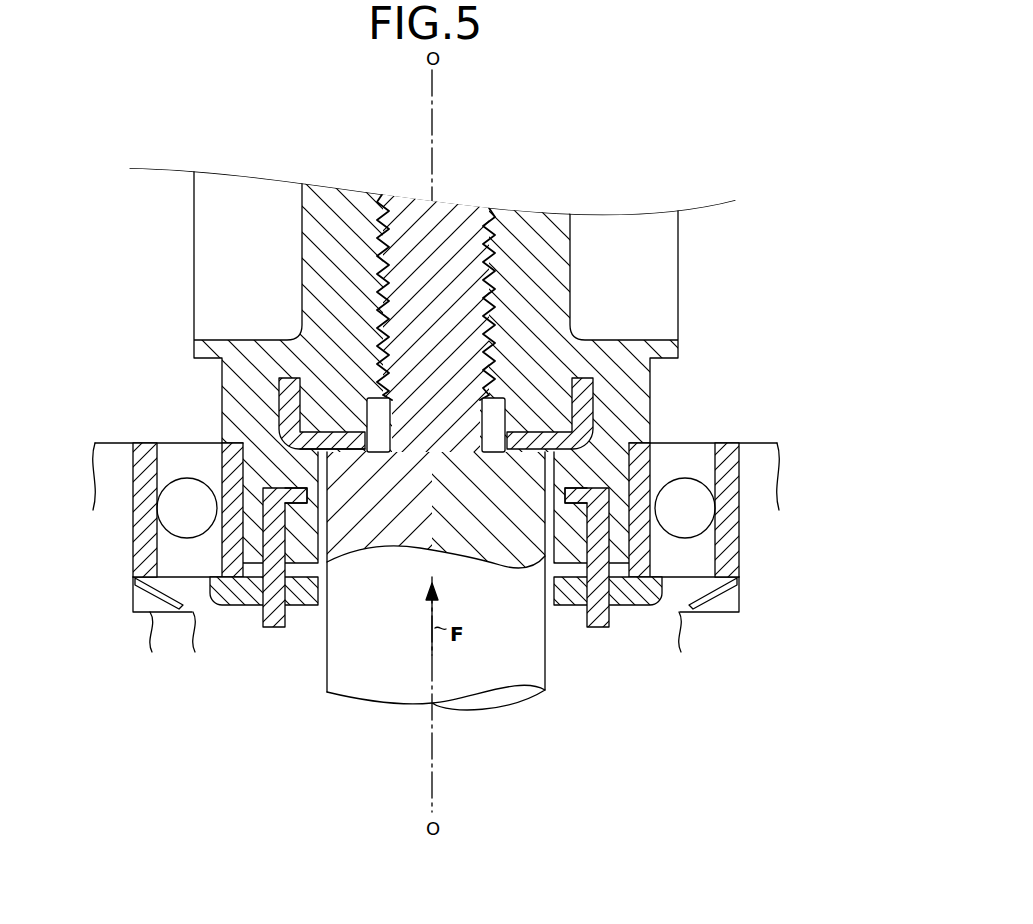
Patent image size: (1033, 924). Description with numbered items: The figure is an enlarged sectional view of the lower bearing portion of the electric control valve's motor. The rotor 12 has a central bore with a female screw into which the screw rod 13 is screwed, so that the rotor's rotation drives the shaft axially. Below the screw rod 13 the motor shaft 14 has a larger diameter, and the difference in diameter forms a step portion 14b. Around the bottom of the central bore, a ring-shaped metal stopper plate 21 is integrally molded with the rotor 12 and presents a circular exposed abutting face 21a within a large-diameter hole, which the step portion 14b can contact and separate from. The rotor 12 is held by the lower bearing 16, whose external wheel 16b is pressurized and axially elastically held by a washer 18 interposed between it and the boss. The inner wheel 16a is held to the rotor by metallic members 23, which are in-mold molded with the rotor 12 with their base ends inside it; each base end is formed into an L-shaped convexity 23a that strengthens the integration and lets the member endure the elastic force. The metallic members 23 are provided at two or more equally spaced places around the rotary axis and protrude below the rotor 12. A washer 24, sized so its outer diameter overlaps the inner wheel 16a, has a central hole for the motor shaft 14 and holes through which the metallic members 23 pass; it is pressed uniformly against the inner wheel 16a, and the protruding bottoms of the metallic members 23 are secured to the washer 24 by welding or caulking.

The rotor 12 is at (537, 223).
The screw rod 13 is at (460, 218).
The motor shaft 14 is at (373, 683).
The step portion 14b is at (522, 397).
The lower bearing 16 is at (449, 518).
The inner wheel 16a is at (650, 458).
The external wheel 16b is at (725, 547).
The washer 18 is at (423, 627).
The stopper plate 21 is at (592, 400).
The exposed abutting face 21a is at (350, 455).
The metallic member 23 is at (270, 618).
The L-shaped convexity 23a is at (292, 488).
The washer 24 is at (228, 600).